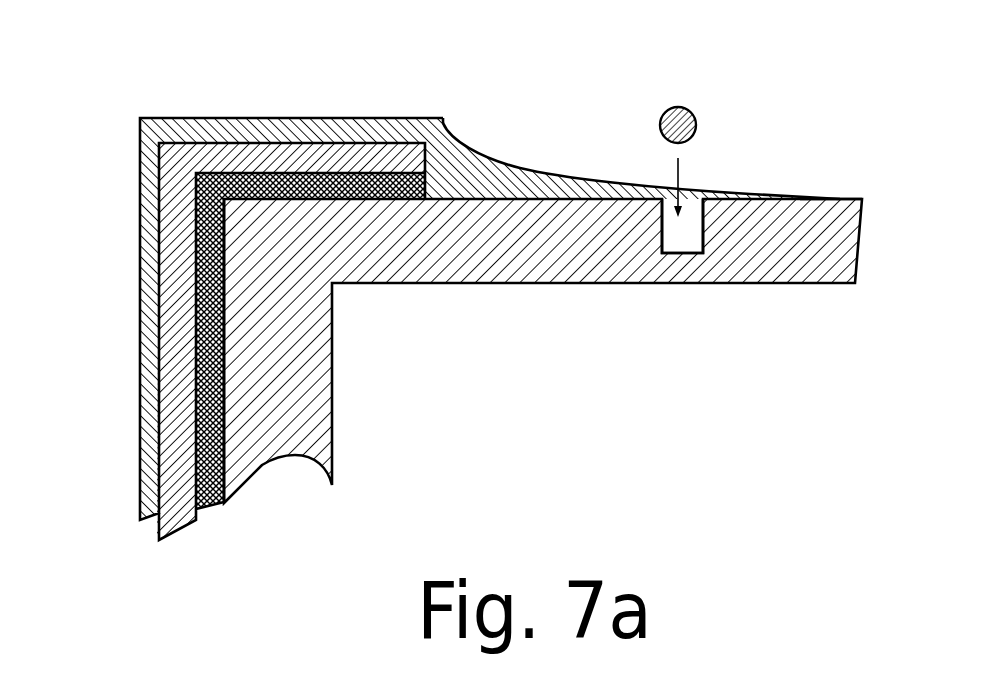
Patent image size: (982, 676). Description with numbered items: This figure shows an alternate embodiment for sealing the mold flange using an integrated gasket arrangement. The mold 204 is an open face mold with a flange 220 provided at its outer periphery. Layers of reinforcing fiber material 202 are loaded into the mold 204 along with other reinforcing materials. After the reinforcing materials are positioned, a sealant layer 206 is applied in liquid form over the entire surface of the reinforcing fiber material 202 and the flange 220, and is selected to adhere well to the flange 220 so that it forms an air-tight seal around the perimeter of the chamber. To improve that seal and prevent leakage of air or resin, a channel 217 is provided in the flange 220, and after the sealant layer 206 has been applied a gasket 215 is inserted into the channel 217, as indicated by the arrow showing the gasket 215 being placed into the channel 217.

The reinforcing fiber material 202 is at (175, 297).
The mold 204 is at (570, 283).
The sealant layer 206 is at (622, 184).
The gasket 215 is at (678, 106).
The channel 217 is at (683, 253).
The flange 220 is at (845, 199).